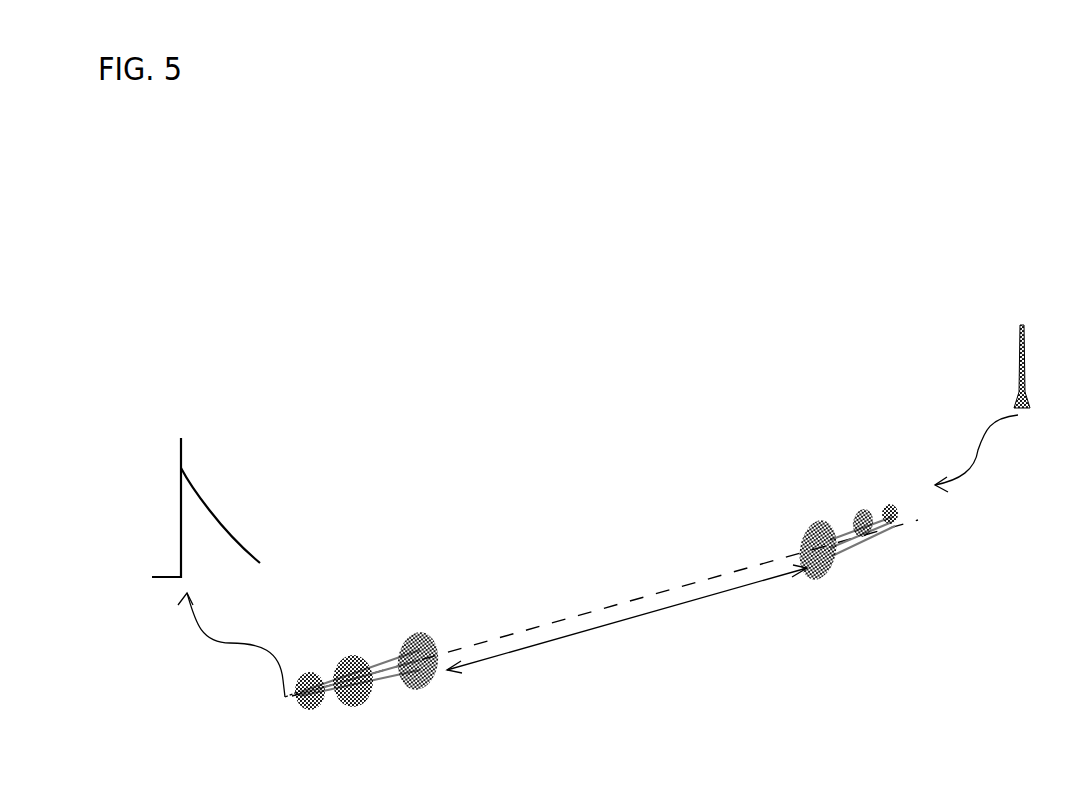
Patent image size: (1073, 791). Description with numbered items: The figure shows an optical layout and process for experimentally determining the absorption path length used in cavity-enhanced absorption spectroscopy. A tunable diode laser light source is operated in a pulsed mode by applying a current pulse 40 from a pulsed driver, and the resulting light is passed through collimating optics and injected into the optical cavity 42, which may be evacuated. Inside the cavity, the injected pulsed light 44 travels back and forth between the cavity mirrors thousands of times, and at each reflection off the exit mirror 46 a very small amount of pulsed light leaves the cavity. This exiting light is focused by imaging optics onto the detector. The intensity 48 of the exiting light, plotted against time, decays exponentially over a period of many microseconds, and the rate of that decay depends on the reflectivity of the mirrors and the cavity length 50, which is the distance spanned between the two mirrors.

The current pulse 40 is at (1011, 307).
The optical cavity 42 is at (567, 617).
The injected pulsed light 44 is at (785, 537).
The exit mirror 46 is at (433, 690).
The intensity 48 is at (185, 428).
The cavity length 50 is at (625, 628).